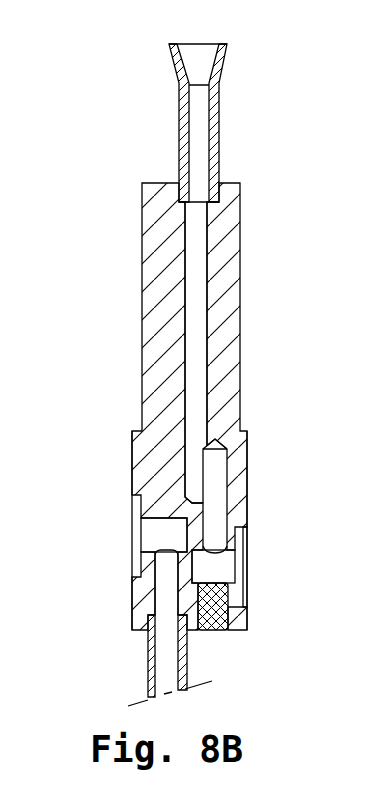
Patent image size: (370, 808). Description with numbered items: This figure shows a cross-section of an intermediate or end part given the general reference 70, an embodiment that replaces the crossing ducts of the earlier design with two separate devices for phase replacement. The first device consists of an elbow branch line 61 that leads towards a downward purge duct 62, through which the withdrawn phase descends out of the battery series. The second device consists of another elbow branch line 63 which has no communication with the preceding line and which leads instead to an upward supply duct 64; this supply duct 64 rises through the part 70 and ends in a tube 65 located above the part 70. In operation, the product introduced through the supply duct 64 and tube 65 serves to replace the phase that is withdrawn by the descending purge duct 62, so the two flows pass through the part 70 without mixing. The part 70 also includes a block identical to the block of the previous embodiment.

The part 70 is at (257, 330).
The tube 65 is at (181, 135).
The upward supply duct 64 is at (200, 349).
The elbow branch line 61 is at (160, 533).
The elbow branch line 63 is at (251, 570).
The downward purge duct 62 is at (148, 651).